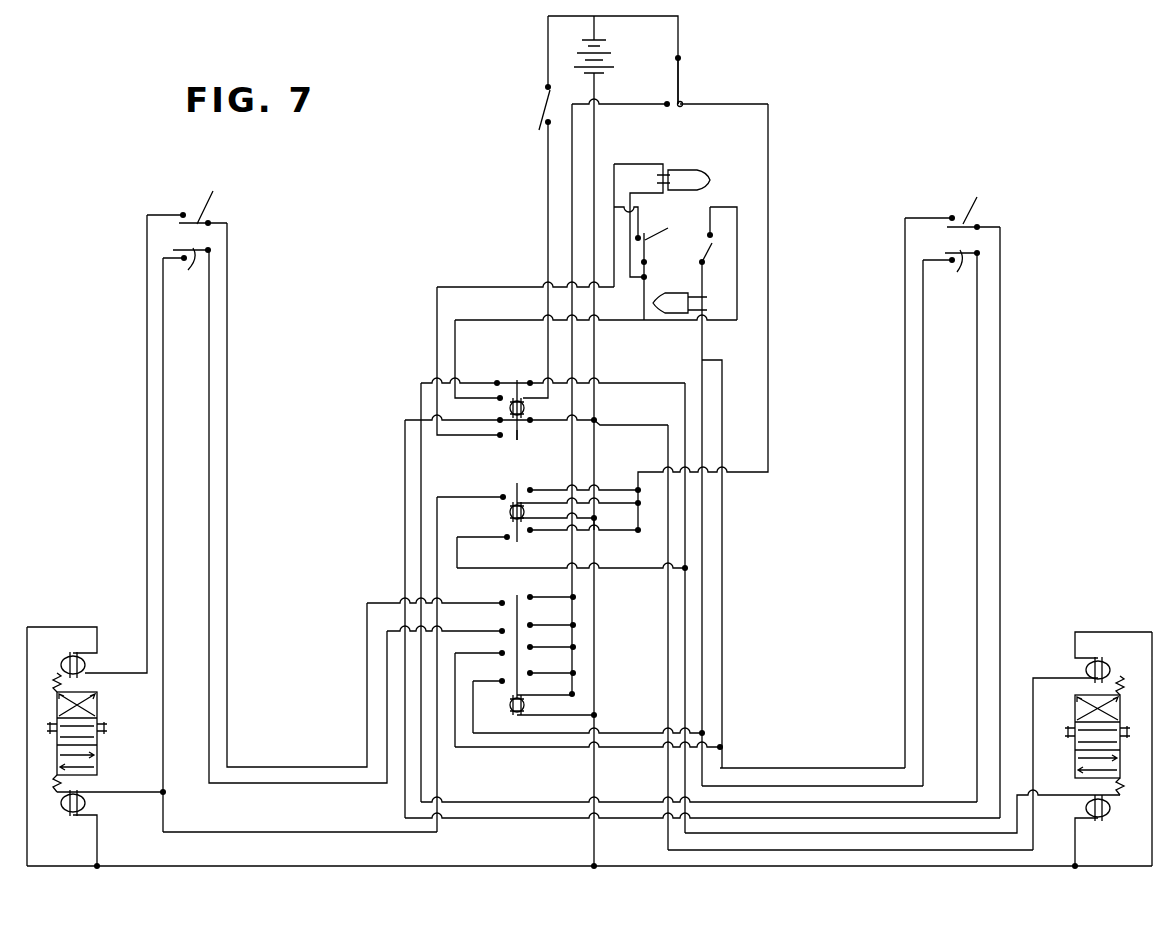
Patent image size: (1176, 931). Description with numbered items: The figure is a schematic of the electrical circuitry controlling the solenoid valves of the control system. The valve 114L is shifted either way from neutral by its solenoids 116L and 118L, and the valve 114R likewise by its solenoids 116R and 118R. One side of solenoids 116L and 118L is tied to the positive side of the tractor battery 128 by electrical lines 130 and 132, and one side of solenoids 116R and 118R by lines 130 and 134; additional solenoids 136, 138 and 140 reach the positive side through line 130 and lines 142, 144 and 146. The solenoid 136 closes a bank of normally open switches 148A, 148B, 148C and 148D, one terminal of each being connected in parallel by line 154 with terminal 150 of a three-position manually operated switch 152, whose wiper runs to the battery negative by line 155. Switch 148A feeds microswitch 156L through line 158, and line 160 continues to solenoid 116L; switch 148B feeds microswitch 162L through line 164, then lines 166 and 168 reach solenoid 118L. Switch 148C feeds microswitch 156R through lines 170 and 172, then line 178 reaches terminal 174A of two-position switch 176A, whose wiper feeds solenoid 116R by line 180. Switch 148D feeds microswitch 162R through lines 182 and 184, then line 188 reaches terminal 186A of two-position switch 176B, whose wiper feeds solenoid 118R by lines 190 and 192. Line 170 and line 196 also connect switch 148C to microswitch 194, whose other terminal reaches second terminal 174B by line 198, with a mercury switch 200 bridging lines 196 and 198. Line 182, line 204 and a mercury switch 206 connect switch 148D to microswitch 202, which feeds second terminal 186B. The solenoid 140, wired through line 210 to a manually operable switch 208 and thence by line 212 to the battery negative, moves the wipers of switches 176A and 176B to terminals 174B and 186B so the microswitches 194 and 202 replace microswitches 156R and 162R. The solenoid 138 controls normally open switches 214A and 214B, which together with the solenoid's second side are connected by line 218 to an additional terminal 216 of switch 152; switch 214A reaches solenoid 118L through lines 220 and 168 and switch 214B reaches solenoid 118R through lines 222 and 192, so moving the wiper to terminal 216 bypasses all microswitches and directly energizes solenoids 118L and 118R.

The solenoid valve 114L is at (97, 700).
The solenoid valve 114R is at (1075, 710).
The solenoid 116L is at (78, 655).
The solenoid 116R is at (1092, 660).
The solenoid 118L is at (70, 814).
The solenoid 118R is at (1104, 822).
The tractor battery 128 is at (605, 72).
The electrical line 130 is at (596, 150).
The electrical line 132 is at (470, 868).
The electrical line 134 is at (776, 868).
The solenoid 136 is at (512, 712).
The solenoid 138 is at (510, 512).
The solenoid 140 is at (527, 412).
The electrical line 142 is at (570, 712).
The electrical line 144 is at (590, 532).
The electrical line 146 is at (620, 405).
The normally open switch 148A is at (504, 592).
The normally open switch 148B is at (504, 625).
The normally open switch 148C is at (504, 650).
The normally open switch 148D is at (506, 676).
The terminal 150 is at (667, 108).
The three-position manually operated switch 152 is at (680, 75).
The electrical line 154 is at (572, 252).
The electrical line 155 is at (680, 28).
The microswitch 156L is at (208, 200).
The microswitch 156R is at (980, 190).
The electrical line 158 is at (228, 560).
The electrical line 160 is at (147, 475).
The microswitch 162L is at (188, 272).
The microswitch 162R is at (957, 272).
The electrical line 164 is at (166, 600).
The electrical line 166 is at (167, 684).
The electrical line 168 is at (120, 790).
The electrical line 170 is at (540, 748).
The electrical line 172 is at (806, 768).
The terminal 174A is at (498, 418).
The terminal 174B is at (498, 437).
The two-position switch 176A is at (517, 430).
The two-position switch 176B is at (512, 380).
The electrical line 178 is at (405, 500).
The electrical line 180 is at (634, 426).
The electrical line 182 is at (630, 722).
The electrical line 184 is at (924, 760).
The terminal 186A is at (498, 380).
The terminal 186B is at (497, 396).
The electrical line 188 is at (421, 402).
The electrical line 190 is at (644, 382).
The electrical line 192 is at (686, 668).
The microswitch 194 is at (665, 226).
The electrical line 196 is at (723, 598).
The electrical line 198 is at (441, 284).
The mercury switch 200 is at (682, 172).
The microswitch 202 is at (702, 256).
The electrical line 204 is at (703, 535).
The mercury switch 206 is at (680, 294).
The manually operable switch 208 is at (544, 104).
The electrical line 210 is at (548, 192).
The electrical line 212 is at (548, 46).
The normally open switch 214A is at (506, 492).
The normally open switch 214B is at (512, 536).
The terminal 216 is at (692, 104).
The electrical line 218 is at (768, 220).
The electrical line 220 is at (270, 828).
The electrical line 222 is at (640, 569).